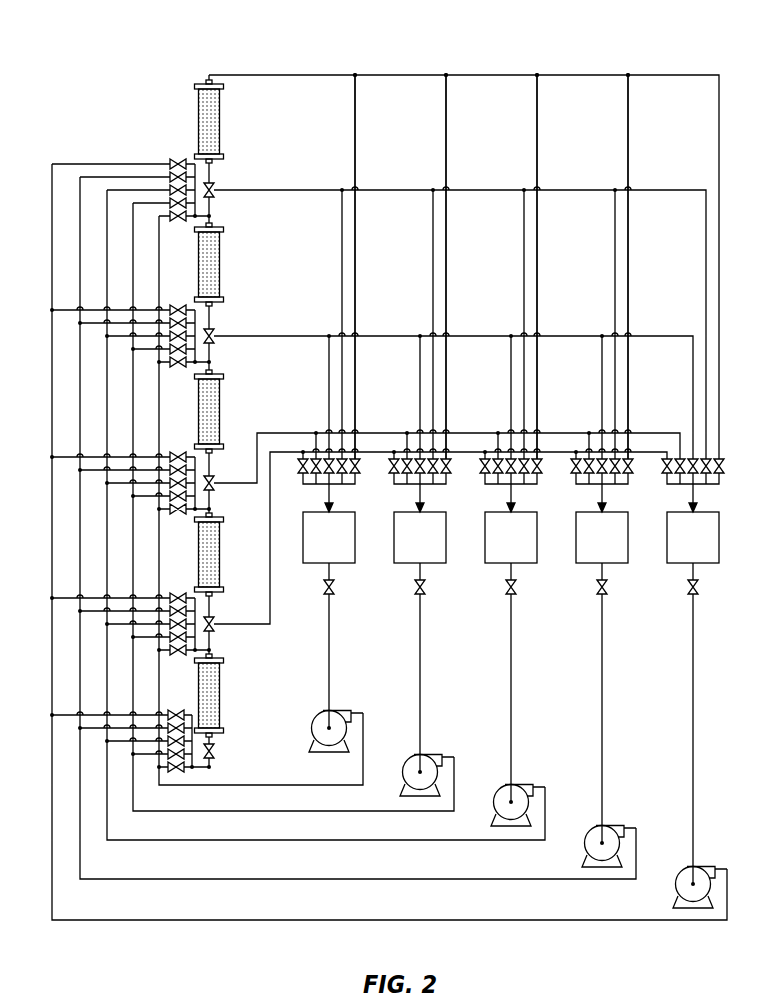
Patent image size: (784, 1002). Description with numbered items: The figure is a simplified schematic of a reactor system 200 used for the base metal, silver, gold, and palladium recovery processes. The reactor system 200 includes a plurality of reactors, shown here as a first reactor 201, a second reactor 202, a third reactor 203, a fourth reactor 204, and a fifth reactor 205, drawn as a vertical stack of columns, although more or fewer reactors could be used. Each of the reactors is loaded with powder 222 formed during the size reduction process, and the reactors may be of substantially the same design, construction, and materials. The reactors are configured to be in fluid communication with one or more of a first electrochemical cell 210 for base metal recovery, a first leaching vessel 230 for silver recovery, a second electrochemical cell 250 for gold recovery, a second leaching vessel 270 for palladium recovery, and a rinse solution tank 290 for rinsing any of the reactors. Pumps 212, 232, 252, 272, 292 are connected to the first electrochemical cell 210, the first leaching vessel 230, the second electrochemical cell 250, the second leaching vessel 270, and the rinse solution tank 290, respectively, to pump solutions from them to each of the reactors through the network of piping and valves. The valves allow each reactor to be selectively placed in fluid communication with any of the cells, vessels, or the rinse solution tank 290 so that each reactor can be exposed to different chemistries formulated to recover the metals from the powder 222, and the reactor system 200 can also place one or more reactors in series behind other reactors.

The reactor system 200 is at (147, 69).
The first reactor 201 is at (222, 129).
The second reactor 202 is at (221, 267).
The third reactor 203 is at (221, 412).
The fourth reactor 204 is at (221, 550).
The fifth reactor 205 is at (221, 710).
The powder 222 is at (208, 120).
The first electrochemical cell 210 is at (314, 548).
The first leaching vessel 230 is at (405, 548).
The second electrochemical cell 250 is at (496, 548).
The second leaching vessel 270 is at (587, 548).
The rinse solution tank 290 is at (678, 548).
The pump 212 is at (310, 750).
The pump 232 is at (401, 794).
The pump 252 is at (492, 824).
The pump 272 is at (583, 865).
The pump 292 is at (674, 906).